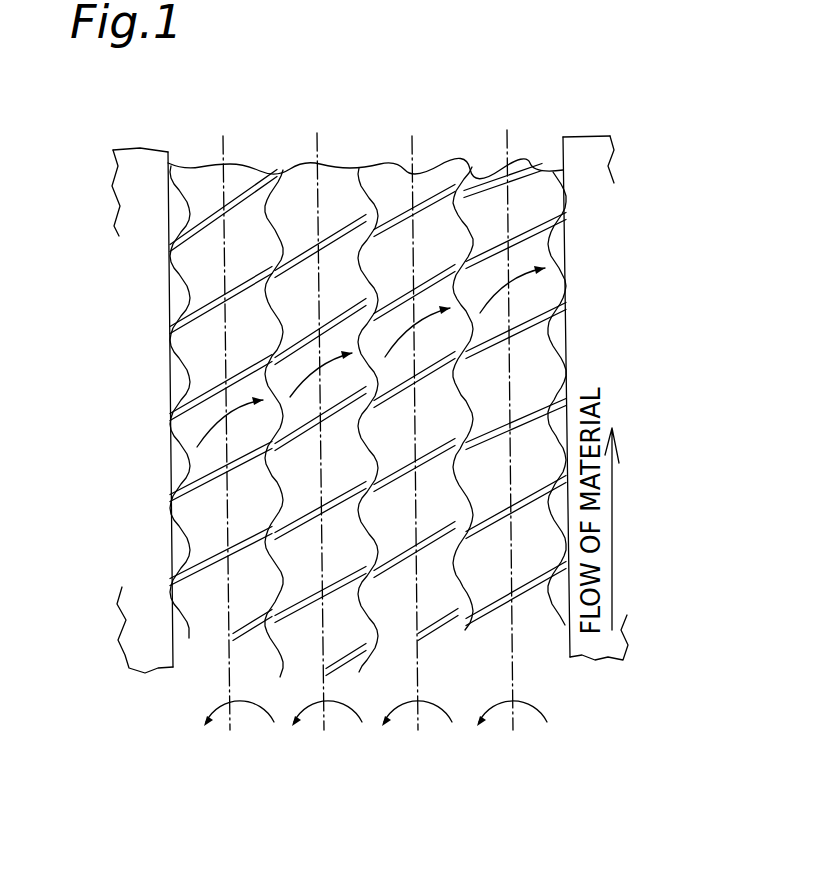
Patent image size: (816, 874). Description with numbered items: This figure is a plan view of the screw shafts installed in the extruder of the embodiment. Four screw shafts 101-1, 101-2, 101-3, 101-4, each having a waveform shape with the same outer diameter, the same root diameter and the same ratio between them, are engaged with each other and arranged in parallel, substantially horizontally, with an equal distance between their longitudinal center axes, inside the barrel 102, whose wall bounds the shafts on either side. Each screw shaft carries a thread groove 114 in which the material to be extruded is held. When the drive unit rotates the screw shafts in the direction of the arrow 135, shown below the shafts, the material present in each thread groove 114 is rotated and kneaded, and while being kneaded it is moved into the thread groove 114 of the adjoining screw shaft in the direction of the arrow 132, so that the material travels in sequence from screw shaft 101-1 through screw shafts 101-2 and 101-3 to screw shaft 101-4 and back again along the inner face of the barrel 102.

The screw shaft 101-1 is at (196, 177).
The screw shaft 101-2 is at (342, 180).
The screw shaft 101-3 is at (438, 176).
The screw shaft 101-4 is at (537, 180).
The barrel 102 is at (147, 607).
The thread groove 114 is at (560, 338).
The arrow 132 is at (212, 420).
The arrow 135 is at (256, 708).